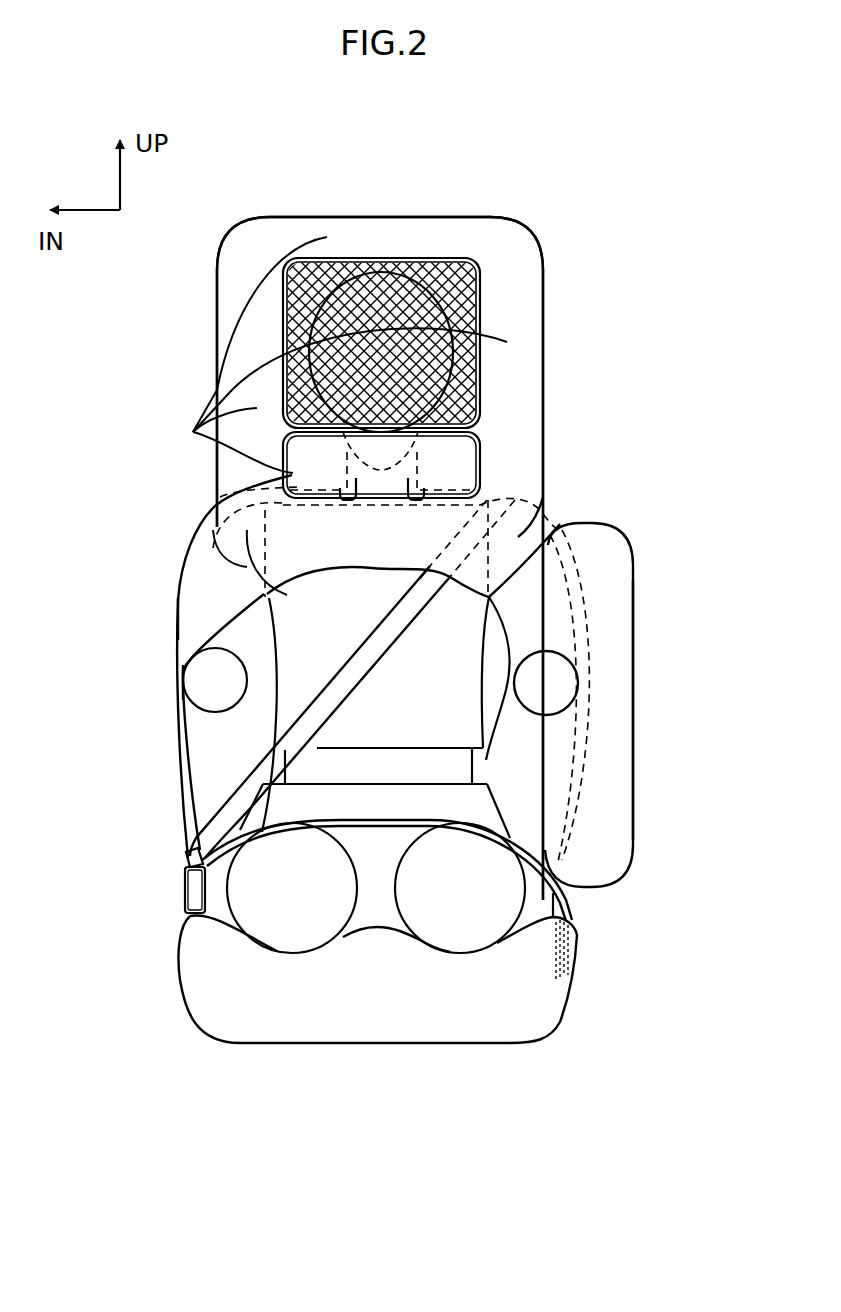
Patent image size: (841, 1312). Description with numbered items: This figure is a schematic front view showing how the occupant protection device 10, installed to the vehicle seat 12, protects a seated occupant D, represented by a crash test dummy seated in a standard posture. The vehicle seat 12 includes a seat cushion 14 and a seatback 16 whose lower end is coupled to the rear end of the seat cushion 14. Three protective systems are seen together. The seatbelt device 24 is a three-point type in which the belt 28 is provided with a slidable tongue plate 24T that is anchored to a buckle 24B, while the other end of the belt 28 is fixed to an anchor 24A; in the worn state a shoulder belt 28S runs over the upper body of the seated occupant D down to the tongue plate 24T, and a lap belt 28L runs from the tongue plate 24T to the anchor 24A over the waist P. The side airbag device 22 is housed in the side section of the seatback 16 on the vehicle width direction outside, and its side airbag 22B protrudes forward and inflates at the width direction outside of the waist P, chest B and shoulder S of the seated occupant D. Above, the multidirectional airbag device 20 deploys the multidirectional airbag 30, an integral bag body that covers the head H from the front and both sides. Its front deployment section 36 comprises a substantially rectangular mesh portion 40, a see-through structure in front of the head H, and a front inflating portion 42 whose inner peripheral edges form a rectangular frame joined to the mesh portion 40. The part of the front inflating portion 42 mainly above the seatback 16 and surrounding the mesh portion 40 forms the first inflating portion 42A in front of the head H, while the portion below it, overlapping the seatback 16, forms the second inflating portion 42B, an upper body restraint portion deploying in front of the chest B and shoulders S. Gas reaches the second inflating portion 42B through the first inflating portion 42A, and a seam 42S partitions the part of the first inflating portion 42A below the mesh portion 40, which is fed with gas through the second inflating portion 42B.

The occupant protection device 10 is at (675, 352).
The vehicle seat 12 is at (175, 562).
The seat cushion 14 is at (484, 1030).
The seatback 16 is at (178, 628).
The multidirectional airbag device 20 is at (568, 232).
The side airbag device 22 is at (642, 545).
The side airbag 22B is at (607, 602).
The seatbelt device 24 is at (212, 786).
The anchor 24A is at (566, 965).
The buckle 24B is at (186, 895).
The tongue plate 24T is at (183, 858).
The belt 28 is at (370, 690).
The lap belt 28L is at (365, 836).
The shoulder belt 28S is at (426, 603).
The multidirectional airbag 30 is at (558, 283).
The front deployment section 36 is at (558, 283).
The mesh portion 40 is at (438, 268).
The front inflating portion 42 is at (130, 420).
The first inflating portion 42A is at (193, 432).
The second inflating portion 42B is at (218, 511).
The seam 42S is at (322, 498).
The head H is at (390, 280).
The shoulder S is at (284, 594).
The chest B is at (368, 556).
The seated occupant D is at (186, 602).
The waist P is at (478, 812).